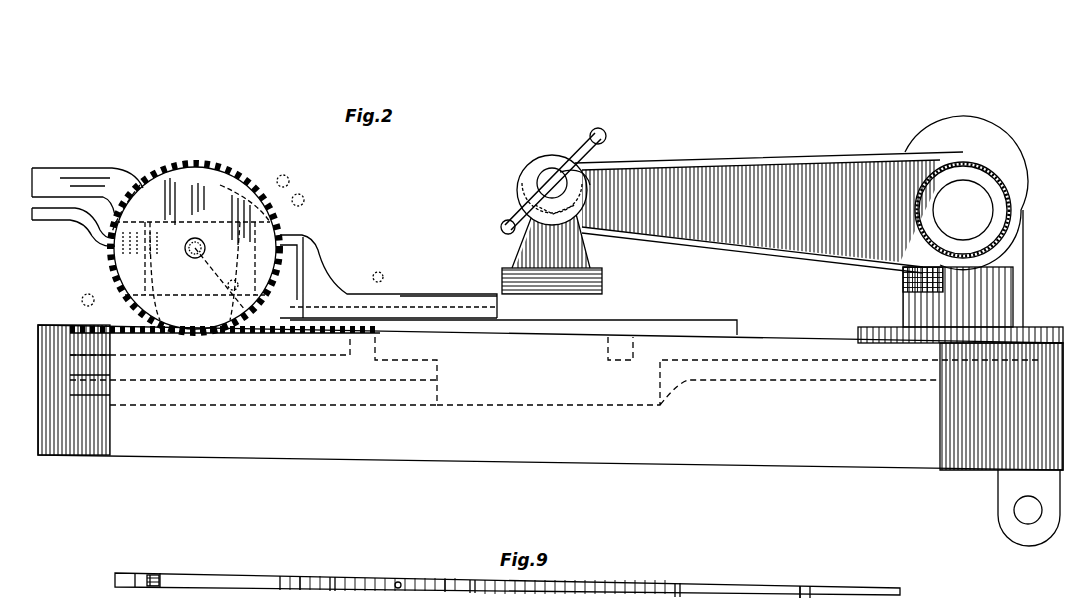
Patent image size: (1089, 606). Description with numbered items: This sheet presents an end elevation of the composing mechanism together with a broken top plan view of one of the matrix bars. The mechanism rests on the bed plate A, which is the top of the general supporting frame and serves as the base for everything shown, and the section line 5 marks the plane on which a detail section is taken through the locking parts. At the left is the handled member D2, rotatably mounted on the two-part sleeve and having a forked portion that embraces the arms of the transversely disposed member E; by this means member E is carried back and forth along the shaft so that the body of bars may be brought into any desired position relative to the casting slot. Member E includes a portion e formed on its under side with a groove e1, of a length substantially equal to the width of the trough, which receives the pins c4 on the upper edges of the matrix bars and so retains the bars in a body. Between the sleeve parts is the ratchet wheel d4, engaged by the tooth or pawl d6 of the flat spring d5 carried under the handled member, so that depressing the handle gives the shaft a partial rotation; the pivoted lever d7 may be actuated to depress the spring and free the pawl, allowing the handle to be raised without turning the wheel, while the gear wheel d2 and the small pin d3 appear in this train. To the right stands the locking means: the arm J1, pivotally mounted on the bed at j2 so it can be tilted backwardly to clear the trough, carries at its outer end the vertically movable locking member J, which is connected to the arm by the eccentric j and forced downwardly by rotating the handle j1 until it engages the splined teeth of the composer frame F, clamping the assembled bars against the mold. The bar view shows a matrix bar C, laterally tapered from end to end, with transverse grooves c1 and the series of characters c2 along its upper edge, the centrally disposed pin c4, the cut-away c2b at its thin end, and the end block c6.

In FIG. 2, the section line 5- 5 is at (550, 525).
In FIG. 2, the bed plate A is at (778, 470).
In FIG. 2, the composer frame F is at (600, 316).
In FIG. 2, the gear wheel d2 is at (175, 185).
In FIG. 2, the handled member D2 is at (100, 178).
In FIG. 2, the pivoted lever d7 is at (75, 215).
In FIG. 2, the pin d3 is at (289, 174).
In FIG. 2, the ratchet wheel d4 is at (304, 193).
In FIG. 2, the flat spring d5 is at (242, 282).
In FIG. 2, the tooth or pawl d6 is at (110, 280).
In FIG. 2, the transversely disposed member E is at (312, 270).
In FIG. 2, the grooved portion e is at (452, 297).
In FIG. 2, the groove e1 is at (365, 305).
In FIG. 2, the locking member J is at (522, 252).
In FIG. 2, the handle j1 is at (605, 130).
In FIG. 2, the eccentric j is at (592, 160).
In FIG. 2, the arm J1 is at (765, 145).
In FIG. 2, the pivot j2 is at (970, 180).
In FIG. 9, the matrix bar C is at (255, 571).
In FIG. 9, the strip end block c6 is at (160, 573).
In FIG. 9, the characters c2 is at (303, 576).
In FIG. 9, the pin c4 is at (398, 580).
In FIG. 9, the transverse grooves c1 is at (450, 579).
In FIG. 9, the cut-away portion c2b is at (830, 576).